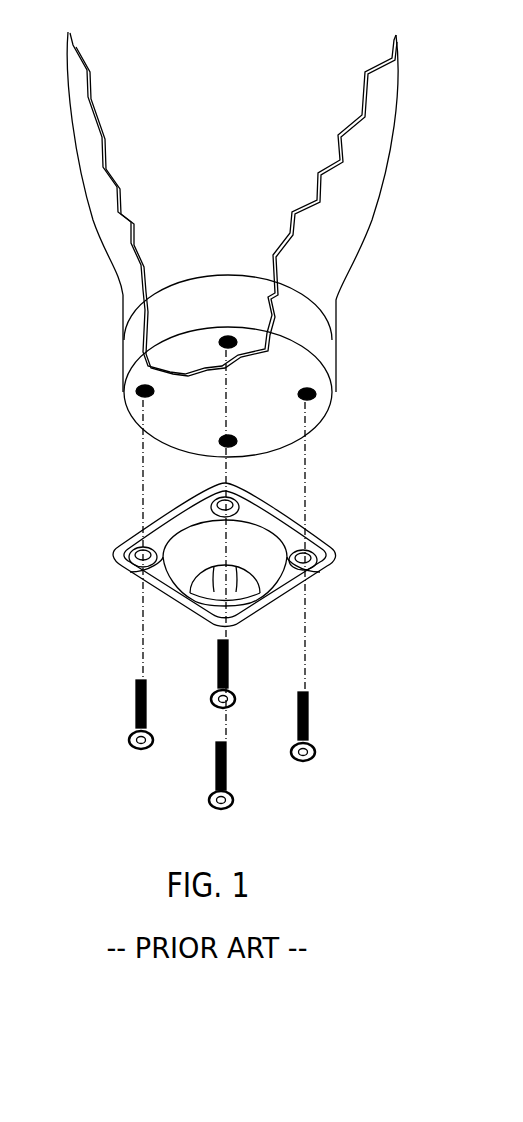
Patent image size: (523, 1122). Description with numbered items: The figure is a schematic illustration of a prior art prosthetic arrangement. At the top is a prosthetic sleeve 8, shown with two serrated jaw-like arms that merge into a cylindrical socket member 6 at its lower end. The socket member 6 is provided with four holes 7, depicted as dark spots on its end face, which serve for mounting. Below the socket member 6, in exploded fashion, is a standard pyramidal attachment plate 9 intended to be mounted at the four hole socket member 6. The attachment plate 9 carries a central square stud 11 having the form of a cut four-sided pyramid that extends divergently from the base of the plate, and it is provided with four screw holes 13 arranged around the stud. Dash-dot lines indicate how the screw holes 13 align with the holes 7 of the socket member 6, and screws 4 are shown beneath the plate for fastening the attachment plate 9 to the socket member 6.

The prosthetic sleeve 8 is at (85, 177).
The socket member 6 is at (150, 314).
The holes 7 is at (136, 391).
The pyramidal attachment plate 9 is at (303, 523).
The screw holes 13 is at (248, 517).
The square stud 11 is at (240, 617).
The screws 4 is at (136, 712).